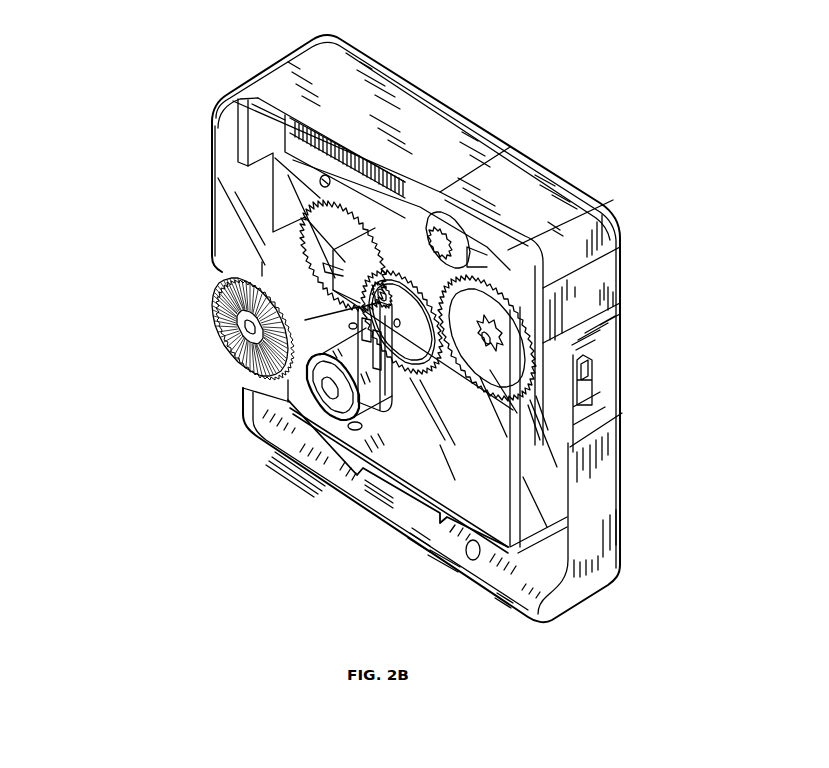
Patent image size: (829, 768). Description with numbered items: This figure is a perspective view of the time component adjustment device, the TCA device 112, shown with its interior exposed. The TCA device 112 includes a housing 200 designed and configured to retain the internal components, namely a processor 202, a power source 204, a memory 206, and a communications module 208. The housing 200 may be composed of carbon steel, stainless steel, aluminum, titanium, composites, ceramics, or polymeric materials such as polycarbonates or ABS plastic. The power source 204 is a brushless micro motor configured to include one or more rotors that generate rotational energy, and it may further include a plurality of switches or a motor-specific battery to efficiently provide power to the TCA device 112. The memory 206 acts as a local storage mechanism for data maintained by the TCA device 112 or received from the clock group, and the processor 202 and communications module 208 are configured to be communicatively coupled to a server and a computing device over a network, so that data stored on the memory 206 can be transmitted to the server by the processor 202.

The TCA device 112 is at (198, 75).
The housing 200 is at (497, 505).
The processor 202 is at (392, 307).
The power source 204 is at (385, 422).
The memory 206 is at (380, 350).
The communications module 208 is at (305, 320).